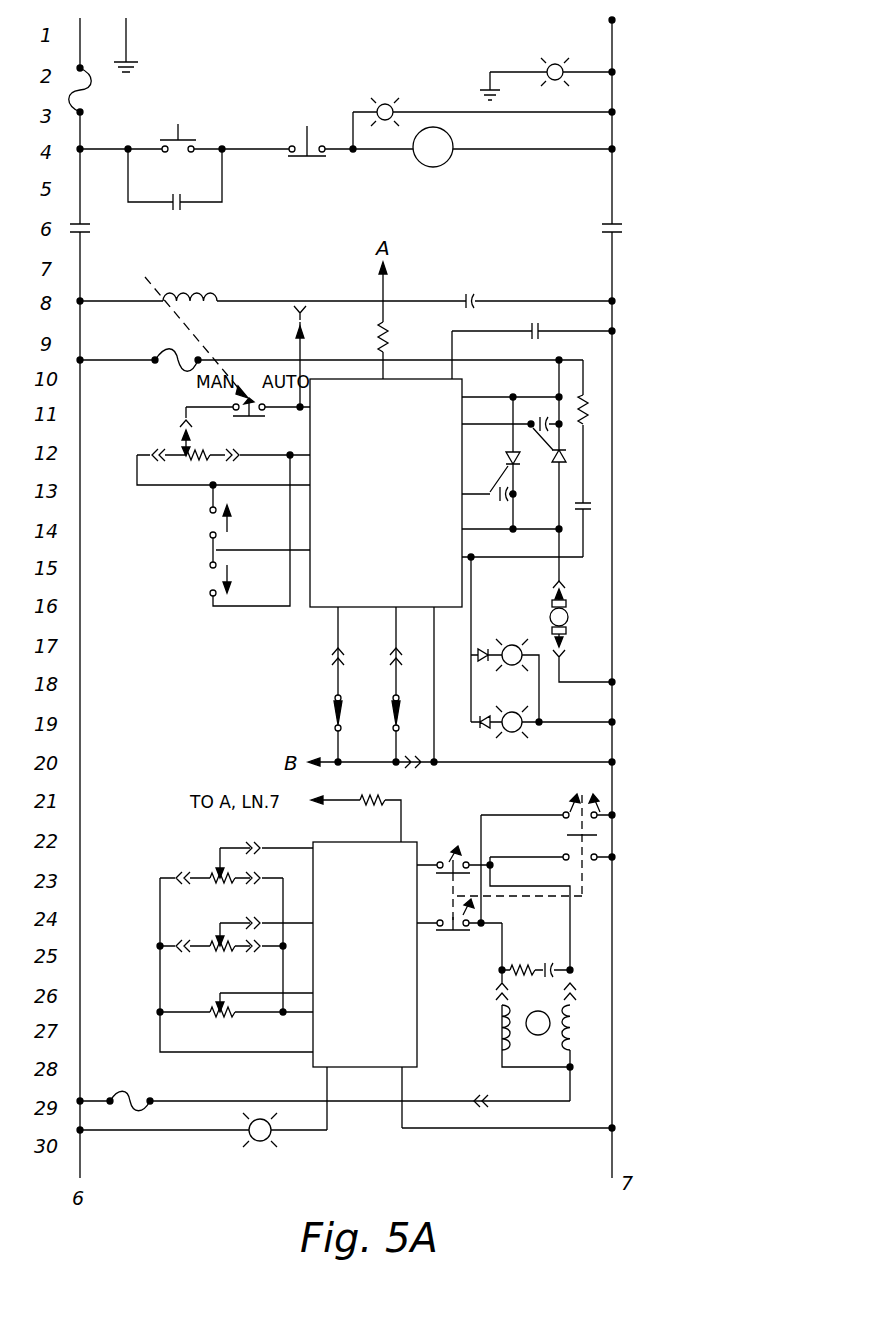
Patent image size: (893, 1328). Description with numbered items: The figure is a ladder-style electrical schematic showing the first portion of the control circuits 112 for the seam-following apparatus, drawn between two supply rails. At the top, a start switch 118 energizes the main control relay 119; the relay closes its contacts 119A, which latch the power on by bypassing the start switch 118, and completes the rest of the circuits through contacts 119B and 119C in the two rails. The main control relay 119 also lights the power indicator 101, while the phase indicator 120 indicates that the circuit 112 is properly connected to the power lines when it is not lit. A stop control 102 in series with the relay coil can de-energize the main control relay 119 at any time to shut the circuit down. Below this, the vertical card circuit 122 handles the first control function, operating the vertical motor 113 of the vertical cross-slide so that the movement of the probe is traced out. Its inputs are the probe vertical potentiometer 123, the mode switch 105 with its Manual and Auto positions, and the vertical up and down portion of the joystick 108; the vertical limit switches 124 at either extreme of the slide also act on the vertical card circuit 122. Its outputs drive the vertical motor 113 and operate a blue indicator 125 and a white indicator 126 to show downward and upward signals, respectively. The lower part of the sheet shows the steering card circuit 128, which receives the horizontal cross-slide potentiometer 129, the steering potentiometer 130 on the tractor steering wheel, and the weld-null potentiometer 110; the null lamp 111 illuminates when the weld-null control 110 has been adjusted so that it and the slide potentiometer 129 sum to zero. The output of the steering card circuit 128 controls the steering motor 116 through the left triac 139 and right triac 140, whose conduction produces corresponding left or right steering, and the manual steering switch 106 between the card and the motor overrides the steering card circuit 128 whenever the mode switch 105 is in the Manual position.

The power indicator 101 is at (396, 107).
The stop control 102 is at (312, 158).
The mode switch 105 is at (466, 932).
The manual steering switch 106 is at (620, 826).
The joystick 108 is at (212, 550).
The weld-null control 110 is at (218, 1006).
The null lamp 111 is at (265, 1148).
The circuits 112 is at (626, 407).
The vertical motor 113 is at (569, 614).
The steering motor 116 is at (548, 1015).
The start switch 118 is at (195, 138).
The main control relay 119 is at (450, 162).
The contacts 119A is at (181, 206).
The contacts 119B is at (88, 234).
The contacts 119C is at (622, 234).
The phase indicator 120 is at (560, 63).
The vertical card circuit 122 is at (404, 392).
The probe vertical potentiometer 123 is at (183, 470).
The vertical limit switches 124 is at (390, 712).
The blue indicator 125 is at (518, 645).
The white indicator 126 is at (521, 731).
The steering card circuit 128 is at (386, 845).
The potentiometer 129 is at (218, 936).
The steering potentiometer 130 is at (218, 866).
The left triac 139 is at (418, 930).
The right triac 140 is at (423, 860).